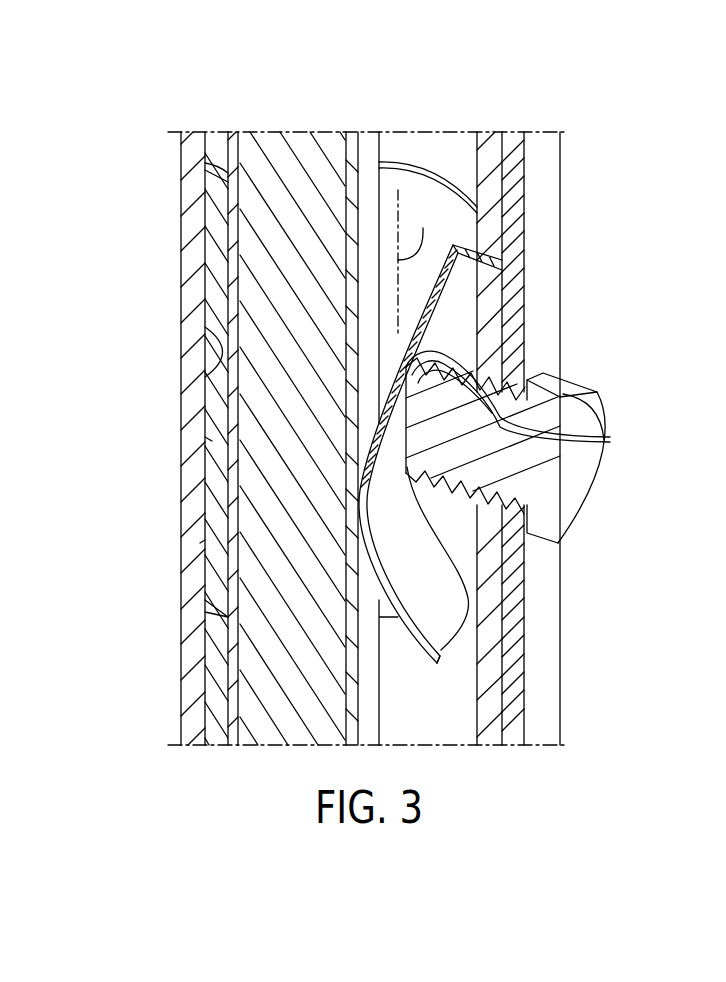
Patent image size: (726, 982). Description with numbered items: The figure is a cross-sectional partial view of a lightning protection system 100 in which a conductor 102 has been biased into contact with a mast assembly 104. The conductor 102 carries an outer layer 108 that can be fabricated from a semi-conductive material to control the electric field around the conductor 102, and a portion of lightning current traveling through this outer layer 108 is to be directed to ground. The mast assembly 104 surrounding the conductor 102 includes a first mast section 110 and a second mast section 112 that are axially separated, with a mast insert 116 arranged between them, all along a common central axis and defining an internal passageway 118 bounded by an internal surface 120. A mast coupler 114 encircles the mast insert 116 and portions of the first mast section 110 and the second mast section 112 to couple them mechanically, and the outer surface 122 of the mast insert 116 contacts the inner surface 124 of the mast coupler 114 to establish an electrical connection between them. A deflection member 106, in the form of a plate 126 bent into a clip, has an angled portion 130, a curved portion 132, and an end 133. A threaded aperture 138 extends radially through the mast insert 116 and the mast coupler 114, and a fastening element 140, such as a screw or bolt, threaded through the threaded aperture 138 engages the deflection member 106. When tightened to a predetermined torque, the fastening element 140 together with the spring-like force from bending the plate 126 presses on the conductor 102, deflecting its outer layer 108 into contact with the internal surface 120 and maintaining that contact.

The lightning protection system 100 is at (512, 100).
The conductor 102 is at (313, 167).
The mast assembly 104 is at (563, 215).
The deflection member 106 is at (415, 660).
The outer layer 108 is at (225, 162).
The first mast section 110 is at (473, 157).
The second mast section 112 is at (217, 747).
The mast coupler 114 is at (197, 623).
The mast insert 116 is at (218, 465).
The internal passageway 118 is at (388, 153).
The internal surface 120 is at (238, 440).
The outer surface 122 is at (200, 543).
The inner surface 124 is at (212, 441).
The plate 126 is at (450, 300).
The angled portion 130 is at (420, 327).
The curved portion 132 is at (422, 580).
The end 133 is at (450, 643).
The threaded aperture 138 is at (603, 443).
The fastening element 140 is at (535, 482).